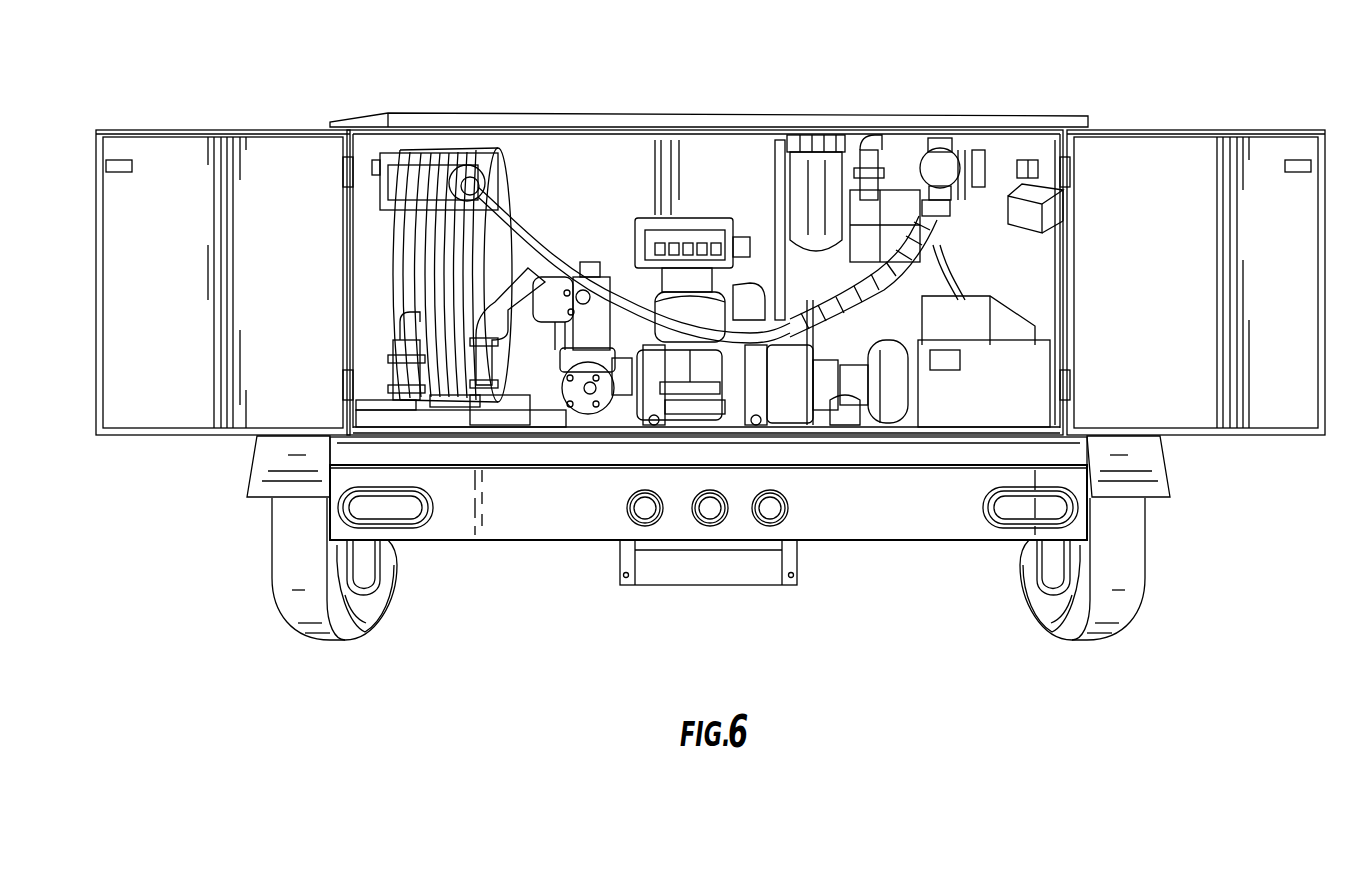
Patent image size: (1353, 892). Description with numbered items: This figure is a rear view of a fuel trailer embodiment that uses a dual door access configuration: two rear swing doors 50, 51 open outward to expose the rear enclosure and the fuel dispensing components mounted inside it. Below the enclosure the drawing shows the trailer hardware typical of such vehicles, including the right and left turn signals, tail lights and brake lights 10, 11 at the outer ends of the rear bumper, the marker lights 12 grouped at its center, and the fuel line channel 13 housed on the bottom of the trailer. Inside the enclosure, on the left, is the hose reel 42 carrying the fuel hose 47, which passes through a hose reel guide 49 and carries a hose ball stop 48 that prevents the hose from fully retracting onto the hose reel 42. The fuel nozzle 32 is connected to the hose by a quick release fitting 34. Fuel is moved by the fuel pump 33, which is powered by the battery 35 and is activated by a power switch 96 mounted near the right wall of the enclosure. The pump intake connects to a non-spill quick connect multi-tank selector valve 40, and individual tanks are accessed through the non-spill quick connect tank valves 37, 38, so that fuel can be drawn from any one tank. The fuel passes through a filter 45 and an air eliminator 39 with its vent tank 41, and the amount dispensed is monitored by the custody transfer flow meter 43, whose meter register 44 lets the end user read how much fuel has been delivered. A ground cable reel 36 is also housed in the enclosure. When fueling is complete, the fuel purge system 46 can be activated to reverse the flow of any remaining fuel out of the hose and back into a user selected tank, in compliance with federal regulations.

The right turn signal 10 is at (987, 510).
The left turn signal 11 is at (403, 510).
The marker lights 12 is at (693, 512).
The fuel line channel 13 is at (743, 565).
The fuel nozzle 32 is at (933, 170).
The fuel pump 33 is at (905, 198).
The quick release fitting 34 is at (853, 293).
The battery 35 is at (1007, 390).
The ground cable reel 36 is at (893, 402).
The non-spill quick connect tank valve 37 is at (755, 418).
The non-spill quick connect tank valve 38 is at (650, 402).
The air eliminator 39 is at (583, 338).
The non-spill quick connect multi-tank selector valve 40 is at (520, 287).
The vent tank 41 is at (392, 420).
The hose reel 42 is at (423, 262).
The custody transfer flow meter 43 is at (682, 353).
The meter register 44 is at (710, 237).
The filter 45 is at (815, 178).
The fuel purge system 46 is at (848, 420).
The fuel hose 47 is at (538, 246).
The hose ball stop 48 is at (466, 176).
The hose reel guide 49 is at (390, 155).
The rear swing door 50 is at (187, 148).
The rear swing door 51 is at (1227, 108).
The power switch 96 is at (1022, 205).